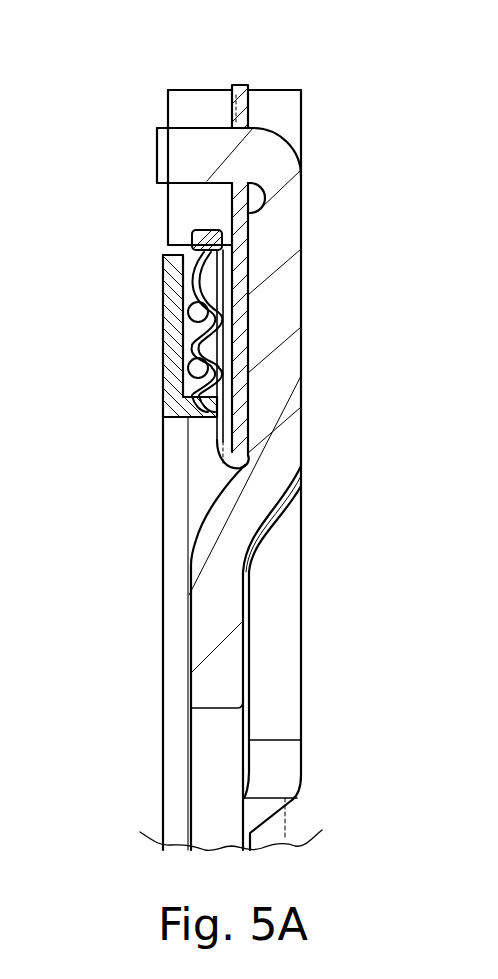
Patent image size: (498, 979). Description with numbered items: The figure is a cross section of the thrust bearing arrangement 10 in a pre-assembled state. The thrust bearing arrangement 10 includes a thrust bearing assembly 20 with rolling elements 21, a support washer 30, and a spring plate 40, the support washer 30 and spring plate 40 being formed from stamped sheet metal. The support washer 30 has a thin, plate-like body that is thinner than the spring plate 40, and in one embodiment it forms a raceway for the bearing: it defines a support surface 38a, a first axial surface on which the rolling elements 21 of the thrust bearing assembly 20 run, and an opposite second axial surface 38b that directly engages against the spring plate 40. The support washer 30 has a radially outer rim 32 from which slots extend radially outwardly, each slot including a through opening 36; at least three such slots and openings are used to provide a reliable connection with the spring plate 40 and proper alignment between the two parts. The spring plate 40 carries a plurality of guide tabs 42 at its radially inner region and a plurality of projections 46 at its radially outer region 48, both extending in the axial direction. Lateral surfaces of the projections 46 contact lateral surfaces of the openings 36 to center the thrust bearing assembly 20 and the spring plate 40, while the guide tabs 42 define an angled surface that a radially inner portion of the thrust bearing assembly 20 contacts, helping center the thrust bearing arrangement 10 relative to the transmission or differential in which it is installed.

The thrust bearing arrangement 10 is at (306, 200).
The thrust bearing assembly 20 is at (158, 345).
The rolling elements 21 is at (180, 252).
The support washer 30 is at (228, 220).
The radially outer rim 32 is at (237, 85).
The through opening 36 is at (240, 122).
The support surface 38a is at (232, 410).
The second axial surface 38b is at (250, 308).
The spring plate 40 is at (183, 603).
The guide tabs 42 is at (223, 592).
The projections 46 is at (173, 157).
The radially outer region 48 is at (267, 163).